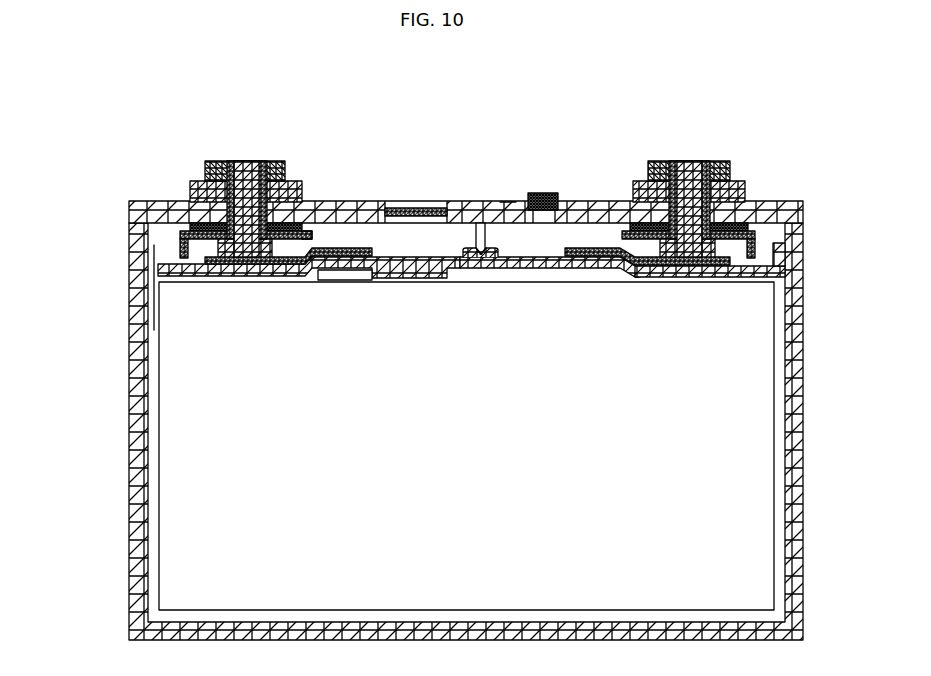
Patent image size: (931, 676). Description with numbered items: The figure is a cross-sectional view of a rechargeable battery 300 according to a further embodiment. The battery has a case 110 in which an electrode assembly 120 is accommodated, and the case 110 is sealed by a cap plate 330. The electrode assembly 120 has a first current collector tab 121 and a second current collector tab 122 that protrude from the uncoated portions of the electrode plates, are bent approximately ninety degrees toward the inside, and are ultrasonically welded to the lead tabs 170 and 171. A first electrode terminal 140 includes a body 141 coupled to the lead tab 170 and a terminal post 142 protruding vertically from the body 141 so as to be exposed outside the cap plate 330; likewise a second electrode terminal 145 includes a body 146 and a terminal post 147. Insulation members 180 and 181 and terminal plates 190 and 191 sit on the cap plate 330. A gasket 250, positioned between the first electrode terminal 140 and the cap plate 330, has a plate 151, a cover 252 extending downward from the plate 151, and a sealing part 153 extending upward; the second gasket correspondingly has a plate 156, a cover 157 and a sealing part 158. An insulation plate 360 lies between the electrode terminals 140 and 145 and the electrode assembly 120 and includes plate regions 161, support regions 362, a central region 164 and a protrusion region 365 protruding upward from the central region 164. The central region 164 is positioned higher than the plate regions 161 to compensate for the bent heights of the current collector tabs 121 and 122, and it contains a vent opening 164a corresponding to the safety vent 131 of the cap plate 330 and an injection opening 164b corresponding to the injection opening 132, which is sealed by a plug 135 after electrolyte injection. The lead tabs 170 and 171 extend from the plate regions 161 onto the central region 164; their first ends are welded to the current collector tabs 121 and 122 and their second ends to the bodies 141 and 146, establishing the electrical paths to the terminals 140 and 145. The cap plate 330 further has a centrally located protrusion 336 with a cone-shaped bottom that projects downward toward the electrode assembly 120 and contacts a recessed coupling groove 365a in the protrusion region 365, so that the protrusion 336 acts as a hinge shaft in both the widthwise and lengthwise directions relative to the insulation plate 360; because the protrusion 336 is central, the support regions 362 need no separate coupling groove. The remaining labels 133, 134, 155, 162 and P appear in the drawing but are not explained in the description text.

The case 110 is at (803, 500).
The electrode assembly 120 is at (748, 410).
The first current collector tab 121 is at (355, 280).
The second current collector tab 122 is at (600, 268).
The safety vent 131 is at (398, 208).
The injection opening 132 is at (506, 202).
The first insulating member 133 is at (229, 163).
The second insulating member 134 is at (704, 163).
The plug 135 is at (545, 193).
The first electrode terminal 140 is at (272, 165).
The body 141 is at (314, 238).
The terminal post 142 is at (255, 185).
The second electrode terminal 145 is at (627, 169).
The body 146 is at (623, 189).
The terminal post 147 is at (680, 162).
The plate 151 is at (180, 235).
The sealing part 153 is at (196, 226).
The second lower insulating assembly 155 is at (694, 292).
The plate 156 is at (710, 258).
The cover 157 is at (752, 258).
The sealing part 158 is at (680, 280).
The plate region 161 is at (258, 258).
The insulating protrusion 162 is at (785, 250).
The central region 164 is at (399, 306).
The vent opening 164a is at (405, 278).
The injection opening 164b is at (558, 268).
The lead tab 170 is at (340, 248).
The lead tab 171 is at (580, 248).
The insulation member 180 is at (190, 182).
The insulation member 181 is at (745, 182).
The terminal plate 190 is at (205, 172).
The terminal plate 191 is at (728, 162).
The gasket 250 is at (162, 255).
The cover 252 is at (180, 252).
The rechargeable battery 300 is at (40, 84).
The cap plate 330 is at (120, 209).
The protrusion 336 is at (479, 222).
The insulation plate 360 is at (397, 321).
The support region 362 is at (178, 304).
The protrusion region 365 is at (482, 304).
The coupling groove 365a is at (469, 250).
The contact point P is at (481, 255).